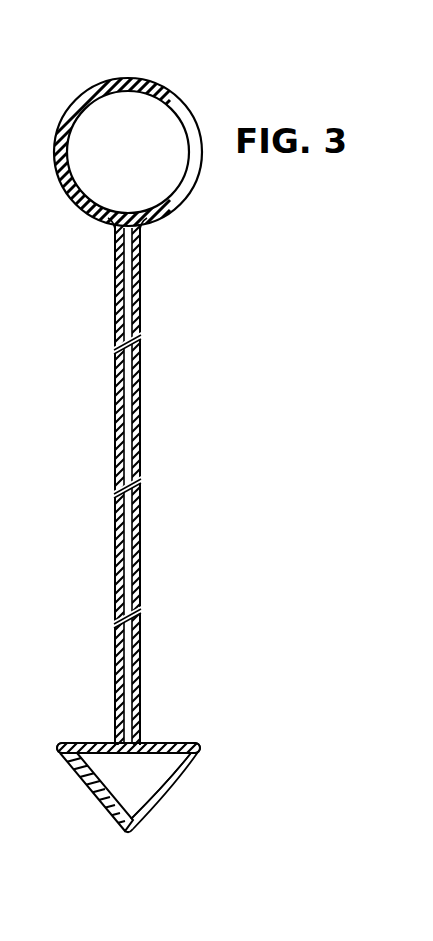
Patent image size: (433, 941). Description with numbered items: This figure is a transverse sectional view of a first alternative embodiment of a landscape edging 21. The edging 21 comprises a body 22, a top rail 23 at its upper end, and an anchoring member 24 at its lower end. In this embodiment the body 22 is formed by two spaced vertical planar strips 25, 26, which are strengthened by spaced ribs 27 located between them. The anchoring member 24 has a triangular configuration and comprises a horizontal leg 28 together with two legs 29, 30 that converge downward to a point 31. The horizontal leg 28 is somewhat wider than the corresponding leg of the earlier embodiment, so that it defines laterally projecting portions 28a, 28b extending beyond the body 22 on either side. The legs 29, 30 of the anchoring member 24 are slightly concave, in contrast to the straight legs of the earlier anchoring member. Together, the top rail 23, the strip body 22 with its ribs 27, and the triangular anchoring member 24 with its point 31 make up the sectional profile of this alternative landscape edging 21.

The landscape edging 21 is at (180, 284).
The body 22 is at (150, 509).
The top rail 23 is at (153, 80).
The anchoring member 24 is at (187, 781).
The vertical planar strip 25 is at (118, 570).
The vertical planar strip 26 is at (140, 556).
The ribs 27 is at (138, 462).
The horizontal leg 28 is at (100, 758).
The laterally projecting portion 28a is at (95, 744).
The laterally projecting portion 28b is at (170, 744).
The leg 29 is at (105, 796).
The leg 30 is at (147, 796).
The point 31 is at (129, 826).